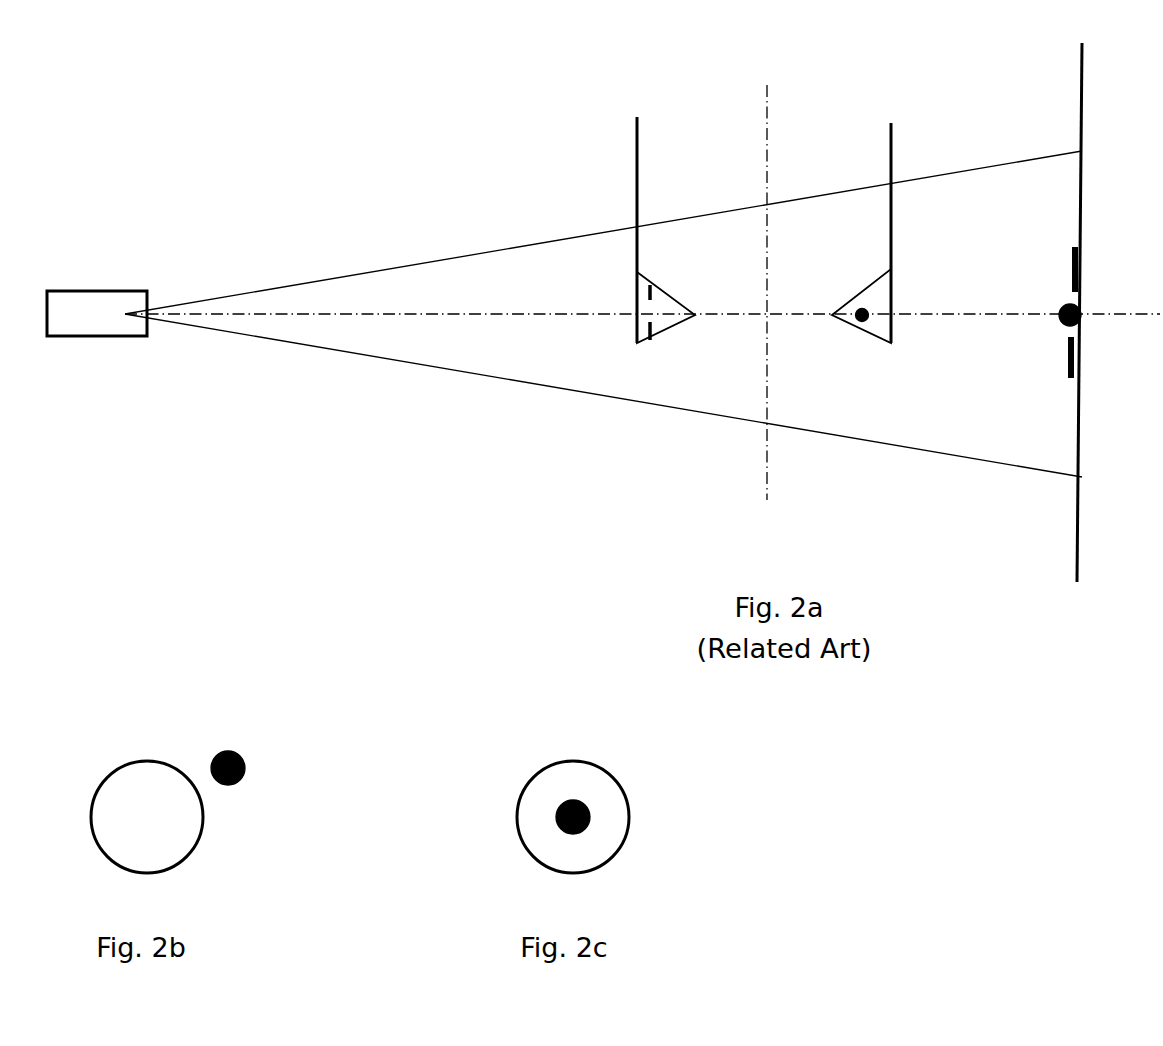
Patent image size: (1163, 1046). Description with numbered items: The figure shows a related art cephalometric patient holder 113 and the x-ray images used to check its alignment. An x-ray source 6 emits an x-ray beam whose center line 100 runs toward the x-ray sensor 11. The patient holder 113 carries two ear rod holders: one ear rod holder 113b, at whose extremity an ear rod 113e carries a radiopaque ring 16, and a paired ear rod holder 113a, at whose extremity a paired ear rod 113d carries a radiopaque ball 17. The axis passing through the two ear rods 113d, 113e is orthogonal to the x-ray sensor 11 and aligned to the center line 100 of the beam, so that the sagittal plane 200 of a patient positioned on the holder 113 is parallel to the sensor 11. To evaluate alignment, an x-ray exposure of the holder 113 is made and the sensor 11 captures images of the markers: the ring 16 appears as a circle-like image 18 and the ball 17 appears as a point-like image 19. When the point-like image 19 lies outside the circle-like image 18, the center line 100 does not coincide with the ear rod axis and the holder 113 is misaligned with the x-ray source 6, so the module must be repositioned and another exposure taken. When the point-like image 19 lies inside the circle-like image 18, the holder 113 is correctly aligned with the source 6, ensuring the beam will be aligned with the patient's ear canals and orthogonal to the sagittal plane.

In FIG. 2A, the x-ray source 6 is at (72, 336).
In FIG. 2A, the center line of the x-ray beam 100 is at (327, 315).
In FIG. 2A, the sagittal plane 200 is at (778, 97).
In FIG. 2A, the patient holder 113 is at (738, 287).
In FIG. 2A, the paired ear rod holder 113a is at (893, 148).
In FIG. 2A, the ear rod holder 113b is at (633, 165).
In FIG. 2A, the paired ear rod 113d is at (877, 338).
In FIG. 2A, the ear rod 113e is at (667, 332).
In FIG. 2A, the radiopaque ring 16 is at (643, 340).
In FIG. 2A, the radiopaque ball 17 is at (862, 322).
In FIG. 2A, the circle-like image 18 is at (1083, 260).
In FIG. 2B, the circle-like image 18 is at (147, 761).
In FIG. 2C, the circle-like image 18 is at (525, 783).
In FIG. 2A, the point-like image 19 is at (1080, 325).
In FIG. 2B, the point-like image 19 is at (242, 783).
In FIG. 2C, the point-like image 19 is at (585, 828).
In FIG. 2A, the x-ray sensor 11 is at (1078, 548).